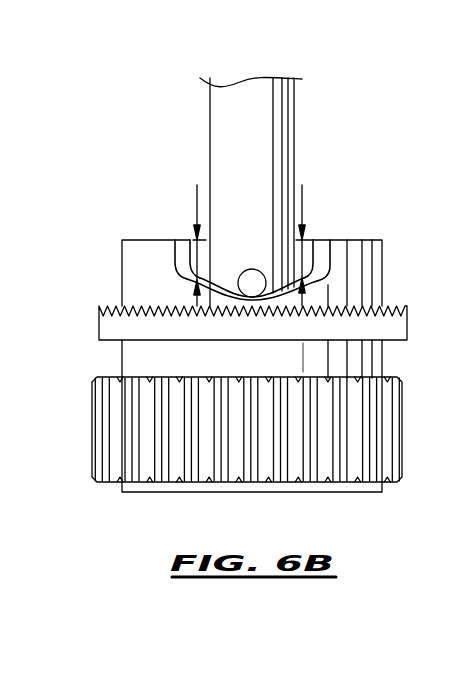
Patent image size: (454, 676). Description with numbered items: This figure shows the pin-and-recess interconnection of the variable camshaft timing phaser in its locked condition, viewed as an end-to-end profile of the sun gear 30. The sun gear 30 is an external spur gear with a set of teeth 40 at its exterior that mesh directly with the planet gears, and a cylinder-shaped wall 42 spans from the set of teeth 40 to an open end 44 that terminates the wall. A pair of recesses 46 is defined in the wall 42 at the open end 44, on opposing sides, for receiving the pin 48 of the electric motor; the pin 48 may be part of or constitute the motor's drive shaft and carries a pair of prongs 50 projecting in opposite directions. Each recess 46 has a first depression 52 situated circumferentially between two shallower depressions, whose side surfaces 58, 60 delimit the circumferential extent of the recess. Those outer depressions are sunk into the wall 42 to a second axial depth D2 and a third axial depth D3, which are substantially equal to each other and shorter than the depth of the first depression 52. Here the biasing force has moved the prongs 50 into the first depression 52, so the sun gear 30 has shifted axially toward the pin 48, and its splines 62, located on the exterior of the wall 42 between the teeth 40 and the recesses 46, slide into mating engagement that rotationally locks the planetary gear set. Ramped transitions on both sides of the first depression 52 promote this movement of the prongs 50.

The sun gear 30 is at (383, 356).
The set of teeth 40 is at (362, 468).
The wall 42 is at (144, 277).
The open end 44 is at (370, 241).
The recesses 46 is at (231, 278).
The pin 48 is at (293, 110).
The prongs 50 is at (253, 281).
The first depression 52 is at (263, 276).
The side surface 58 is at (178, 253).
The side surface 60 is at (321, 254).
The teeth (splines) 62 is at (374, 306).
The second axial depth D2 is at (196, 198).
The third axial depth D3 is at (304, 198).